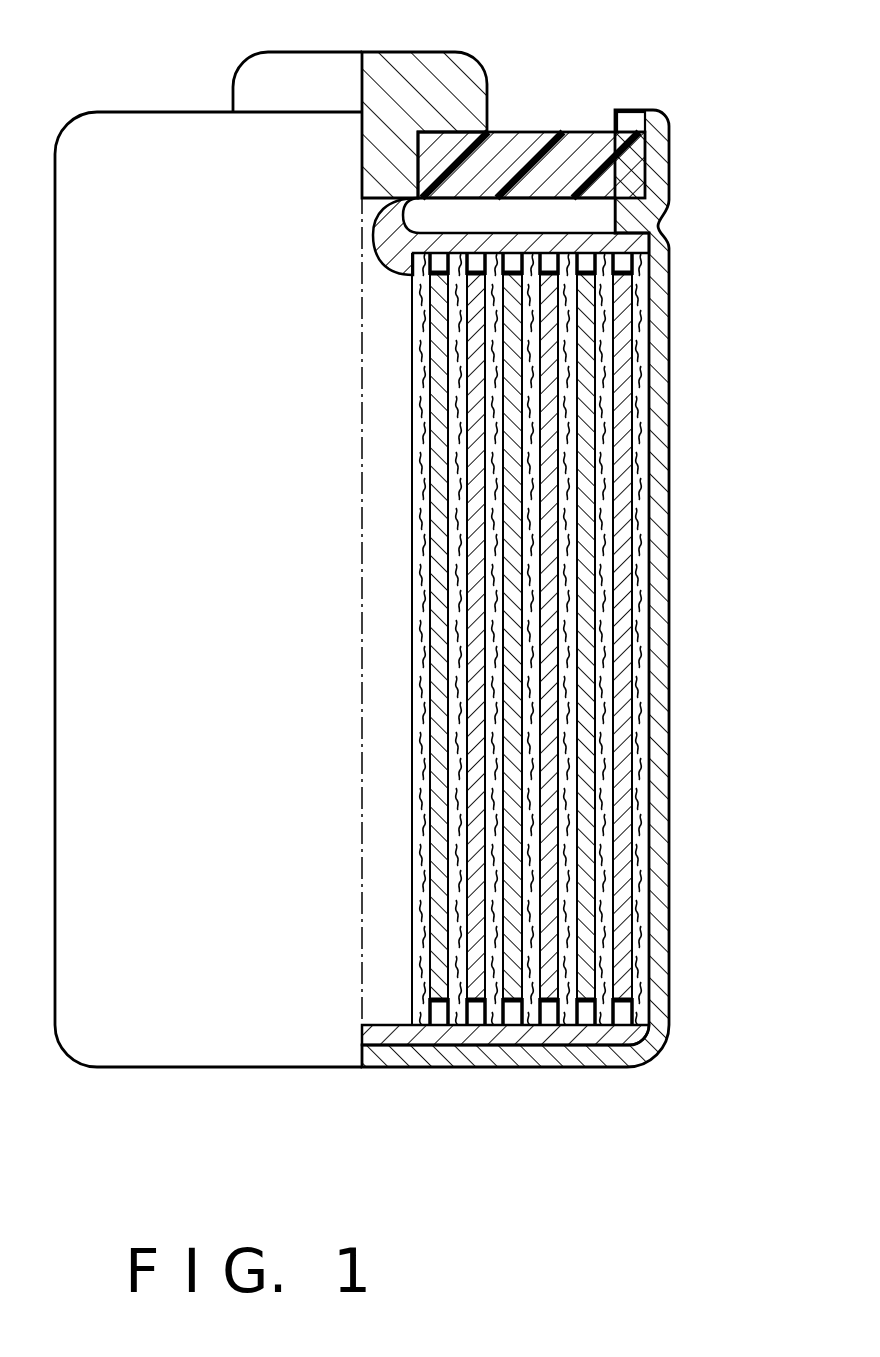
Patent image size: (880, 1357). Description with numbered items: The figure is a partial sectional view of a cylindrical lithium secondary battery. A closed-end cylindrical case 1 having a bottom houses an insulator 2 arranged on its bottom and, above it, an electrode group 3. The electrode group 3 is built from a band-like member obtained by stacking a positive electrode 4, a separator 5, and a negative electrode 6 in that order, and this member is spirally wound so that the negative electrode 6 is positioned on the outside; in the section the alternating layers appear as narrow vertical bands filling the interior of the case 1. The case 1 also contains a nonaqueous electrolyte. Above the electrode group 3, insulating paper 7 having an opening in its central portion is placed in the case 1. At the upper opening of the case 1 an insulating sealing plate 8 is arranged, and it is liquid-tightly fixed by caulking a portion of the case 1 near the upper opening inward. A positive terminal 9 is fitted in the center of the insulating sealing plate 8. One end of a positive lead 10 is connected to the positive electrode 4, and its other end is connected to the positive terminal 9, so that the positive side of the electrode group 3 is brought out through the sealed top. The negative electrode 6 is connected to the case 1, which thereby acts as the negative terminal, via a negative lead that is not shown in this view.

The closed-end cylindrical case 1 is at (660, 872).
The insulator 2 is at (530, 1040).
The electrode group 3 is at (602, 639).
The positive electrode 4 is at (548, 392).
The separator 5 is at (600, 437).
The negative electrode 6 is at (742, 358).
The insulating paper 7 is at (669, 240).
The insulating sealing plate 8 is at (583, 143).
The positive terminal 9 is at (424, 76).
The positive lead 10 is at (378, 256).